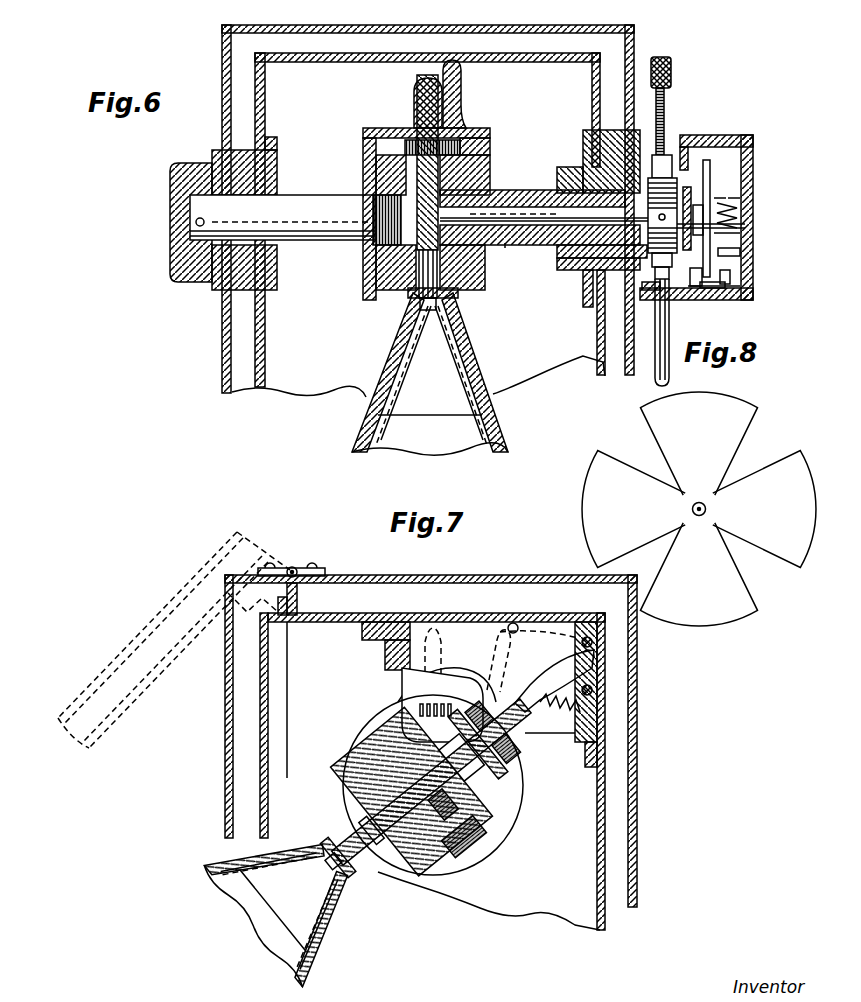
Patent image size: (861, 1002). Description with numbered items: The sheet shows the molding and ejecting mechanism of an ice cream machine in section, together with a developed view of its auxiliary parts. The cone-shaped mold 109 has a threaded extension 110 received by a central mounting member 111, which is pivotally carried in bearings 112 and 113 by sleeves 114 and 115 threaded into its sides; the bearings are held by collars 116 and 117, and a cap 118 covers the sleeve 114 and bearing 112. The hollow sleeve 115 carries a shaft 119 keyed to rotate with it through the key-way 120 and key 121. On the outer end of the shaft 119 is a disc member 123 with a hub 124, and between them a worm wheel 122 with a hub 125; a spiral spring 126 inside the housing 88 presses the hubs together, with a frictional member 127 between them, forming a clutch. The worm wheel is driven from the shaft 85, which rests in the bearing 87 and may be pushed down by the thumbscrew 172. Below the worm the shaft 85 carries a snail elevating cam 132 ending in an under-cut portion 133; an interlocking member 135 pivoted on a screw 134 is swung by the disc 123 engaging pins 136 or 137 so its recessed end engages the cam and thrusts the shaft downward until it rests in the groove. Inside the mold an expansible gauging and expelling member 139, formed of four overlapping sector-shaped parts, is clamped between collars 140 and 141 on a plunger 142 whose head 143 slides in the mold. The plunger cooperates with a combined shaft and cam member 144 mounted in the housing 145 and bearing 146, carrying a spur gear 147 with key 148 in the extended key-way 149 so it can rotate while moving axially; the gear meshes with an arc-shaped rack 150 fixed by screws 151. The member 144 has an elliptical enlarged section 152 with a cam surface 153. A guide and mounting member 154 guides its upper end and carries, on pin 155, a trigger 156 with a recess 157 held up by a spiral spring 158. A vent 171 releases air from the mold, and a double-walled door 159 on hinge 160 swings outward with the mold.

In FIG. 6, the shaft 85 is at (670, 322).
In FIG. 6, the bearing 87 is at (668, 160).
In FIG. 6, the housing 88 is at (746, 194).
In FIG. 6, the mold 109 is at (488, 430).
In FIG. 7, the mold 109 is at (233, 858).
In FIG. 6, the extension 110 is at (436, 285).
In FIG. 6, the central mounting member 111 is at (390, 292).
In FIG. 6, the bearing 112 is at (221, 292).
In FIG. 6, the bearing 113 is at (605, 172).
In FIG. 6, the sleeve 114 is at (336, 196).
In FIG. 6, the sleeve 115 is at (495, 205).
In FIG. 6, the collar 116 is at (278, 280).
In FIG. 6, the collar 117 is at (560, 258).
In FIG. 6, the cap 118 is at (189, 278).
In FIG. 6, the shaft 119 is at (476, 210).
In FIG. 6, the key-way 120 is at (506, 246).
In FIG. 6, the key 121 is at (532, 243).
In FIG. 6, the worm wheel 122 is at (741, 252).
In FIG. 6, the disc member 123 is at (711, 172).
In FIG. 6, the hub 124 is at (704, 200).
In FIG. 6, the hub 125 is at (689, 200).
In FIG. 6, the spiral spring 126 is at (741, 212).
In FIG. 6, the frictional member 127 is at (692, 228).
In FIG. 6, the snail elevating cam 132 is at (630, 348).
In FIG. 6, the under-cut portion 133 is at (664, 290).
In FIG. 6, the screw 134 is at (727, 280).
In FIG. 6, the interlocking member 135 is at (700, 286).
In FIG. 6, the pin 136 is at (690, 276).
In FIG. 6, the pin 137 is at (737, 268).
In FIG. 6, the gauging and expelling member 139 is at (462, 366).
In FIG. 8, the gauging and expelling member 139 is at (727, 424).
In FIG. 7, the gauging and expelling member 139 is at (334, 928).
In FIG. 6, the collar 140 is at (411, 335).
In FIG. 7, the collar 140 is at (318, 866).
In FIG. 6, the collar 141 is at (437, 303).
In FIG. 7, the collar 141 is at (367, 882).
In FIG. 6, the plunger 142 is at (436, 272).
In FIG. 7, the head 143 is at (356, 760).
In FIG. 6, the combined shaft and cam member 144 is at (412, 200).
In FIG. 7, the combined shaft and cam member 144 is at (452, 806).
In FIG. 6, the housing 145 is at (390, 130).
In FIG. 6, the bearing 146 is at (380, 150).
In FIG. 6, the spur gear 147 is at (463, 103).
In FIG. 7, the spur gear 147 is at (506, 763).
In FIG. 7, the key 148 is at (516, 746).
In FIG. 7, the key-way 149 is at (463, 789).
In FIG. 7, the rack 150 is at (420, 700).
In FIG. 6, the screw 151 is at (462, 88).
In FIG. 6, the enlarged section 152 is at (393, 242).
In FIG. 7, the enlarged section 152 is at (464, 838).
In FIG. 6, the cam surface 153 is at (460, 148).
In FIG. 7, the cam surface 153 is at (442, 824).
In FIG. 7, the combined guide and mounting member 154 is at (468, 634).
In FIG. 7, the pin 155 is at (596, 657).
In FIG. 7, the trigger 156 is at (596, 680).
In FIG. 7, the recess 157 is at (565, 730).
In FIG. 7, the spiral spring 158 is at (582, 708).
In FIG. 7, the door 159 is at (225, 735).
In FIG. 7, the hinge 160 is at (297, 571).
In FIG. 7, the vent 171 is at (412, 876).
In FIG. 6, the thumbscrew 172 is at (673, 68).